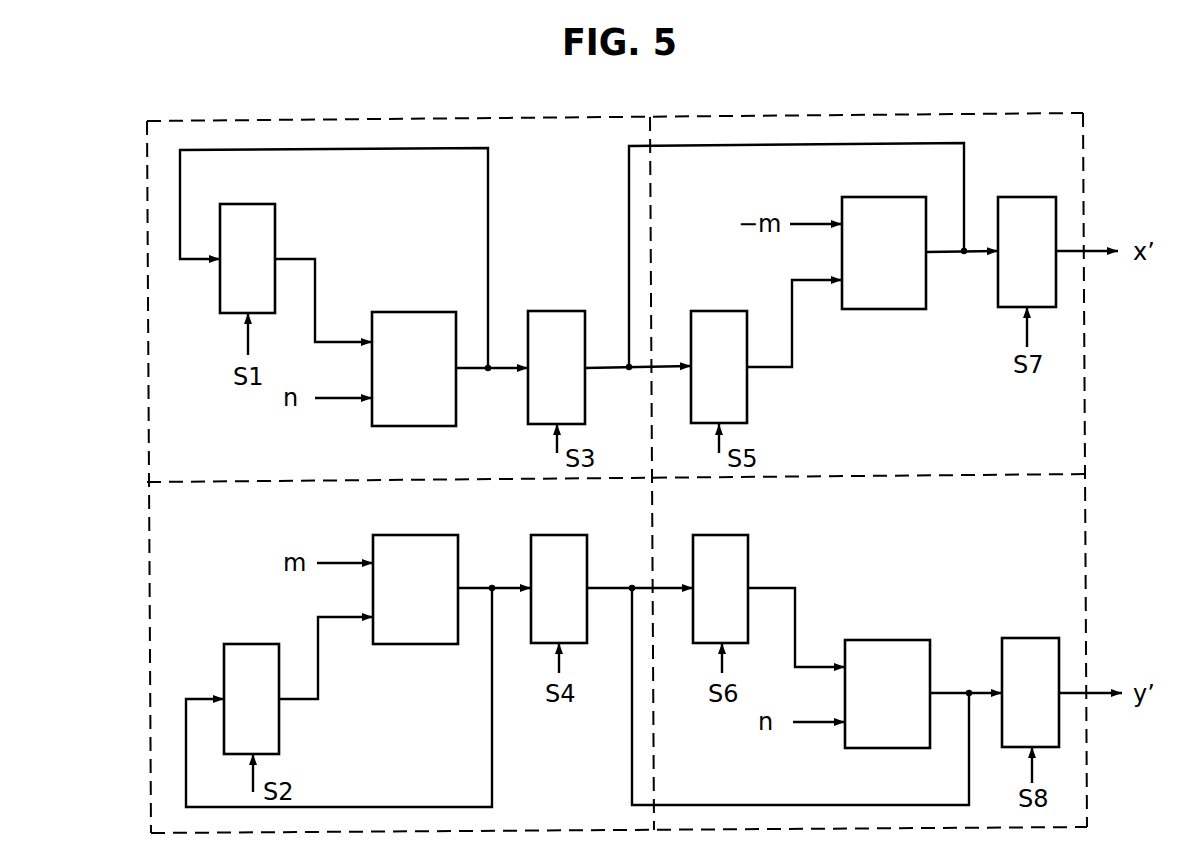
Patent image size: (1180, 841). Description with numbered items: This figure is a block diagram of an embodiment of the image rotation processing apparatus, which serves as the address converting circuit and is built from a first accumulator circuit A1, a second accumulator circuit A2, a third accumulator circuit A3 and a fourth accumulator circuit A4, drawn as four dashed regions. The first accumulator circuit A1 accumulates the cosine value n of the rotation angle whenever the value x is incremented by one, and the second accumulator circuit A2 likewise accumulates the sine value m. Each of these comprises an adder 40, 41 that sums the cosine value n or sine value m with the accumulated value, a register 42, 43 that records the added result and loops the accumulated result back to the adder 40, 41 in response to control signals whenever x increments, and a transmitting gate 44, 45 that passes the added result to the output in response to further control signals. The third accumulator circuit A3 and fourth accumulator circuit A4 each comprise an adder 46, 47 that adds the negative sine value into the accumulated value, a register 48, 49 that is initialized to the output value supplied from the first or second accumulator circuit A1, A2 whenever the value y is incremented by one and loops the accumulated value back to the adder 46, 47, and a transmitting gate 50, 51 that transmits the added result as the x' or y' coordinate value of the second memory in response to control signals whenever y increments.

The adder 40 is at (417, 312).
The adder 41 is at (410, 644).
The register 42 is at (277, 230).
The register 43 is at (237, 644).
The transmitting gate 44 is at (557, 311).
The transmitting gate 45 is at (543, 535).
The adder 46 is at (877, 309).
The adder 47 is at (897, 640).
The register 48 is at (707, 311).
The register 49 is at (747, 535).
The transmitting gate 50 is at (1022, 197).
The transmitting gate 51 is at (1025, 638).
The first accumulator circuit A1 is at (168, 375).
The second accumulator circuit A2 is at (165, 568).
The third accumulator circuit A3 is at (1065, 400).
The fourth accumulator circuit A4 is at (1065, 573).